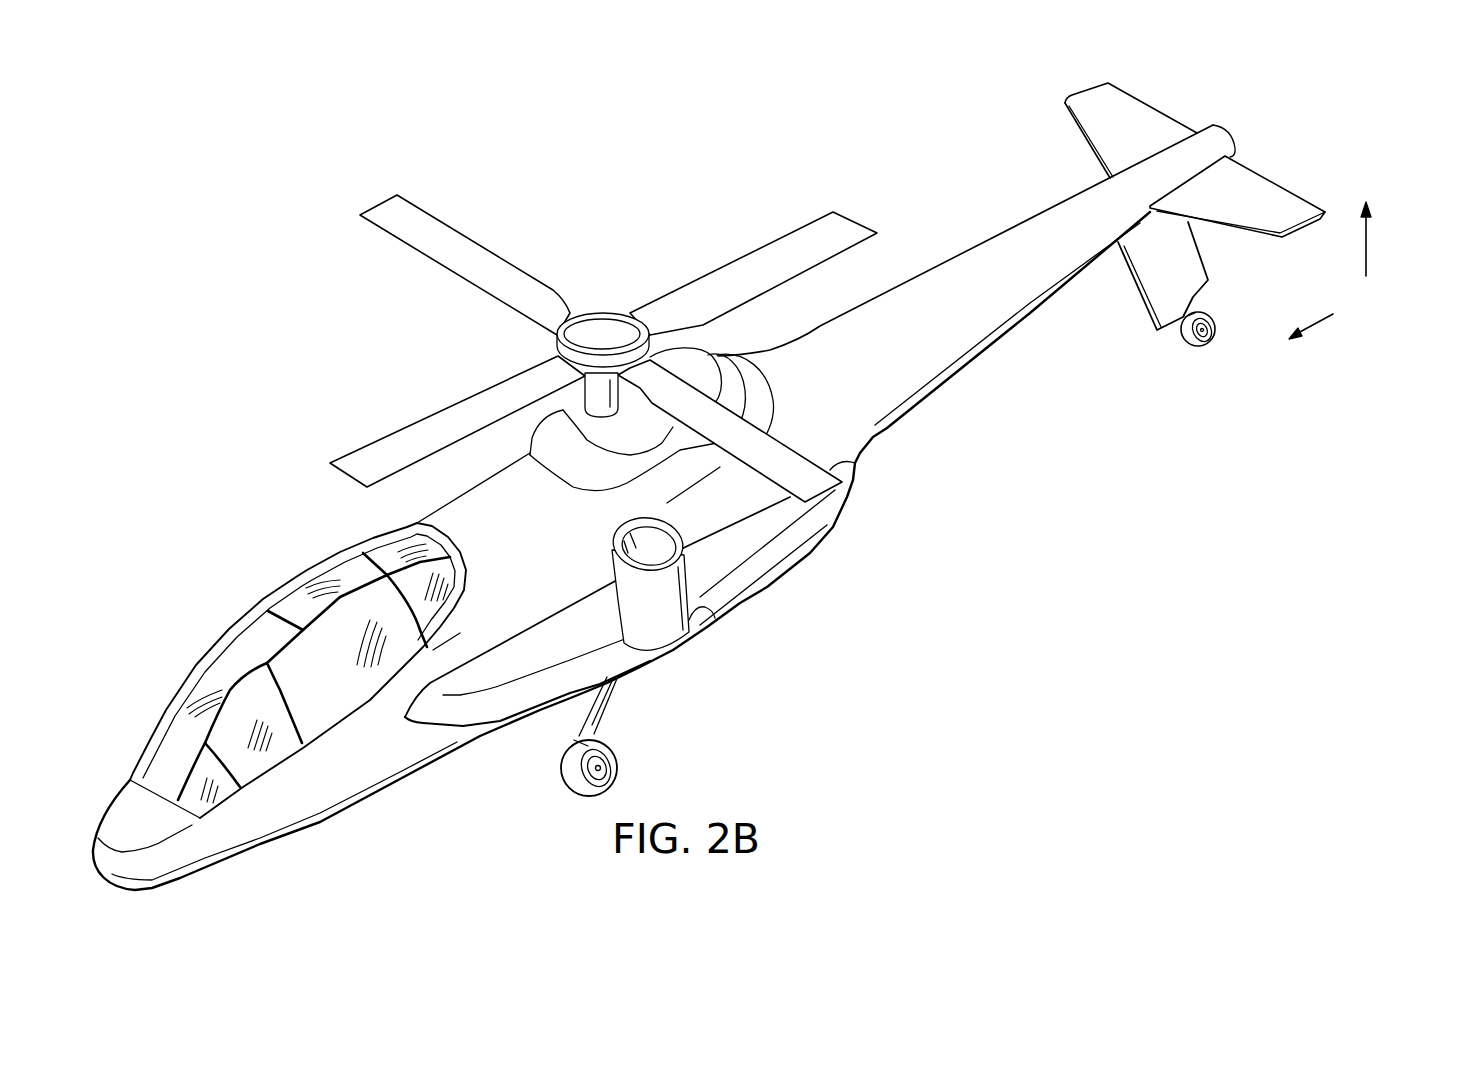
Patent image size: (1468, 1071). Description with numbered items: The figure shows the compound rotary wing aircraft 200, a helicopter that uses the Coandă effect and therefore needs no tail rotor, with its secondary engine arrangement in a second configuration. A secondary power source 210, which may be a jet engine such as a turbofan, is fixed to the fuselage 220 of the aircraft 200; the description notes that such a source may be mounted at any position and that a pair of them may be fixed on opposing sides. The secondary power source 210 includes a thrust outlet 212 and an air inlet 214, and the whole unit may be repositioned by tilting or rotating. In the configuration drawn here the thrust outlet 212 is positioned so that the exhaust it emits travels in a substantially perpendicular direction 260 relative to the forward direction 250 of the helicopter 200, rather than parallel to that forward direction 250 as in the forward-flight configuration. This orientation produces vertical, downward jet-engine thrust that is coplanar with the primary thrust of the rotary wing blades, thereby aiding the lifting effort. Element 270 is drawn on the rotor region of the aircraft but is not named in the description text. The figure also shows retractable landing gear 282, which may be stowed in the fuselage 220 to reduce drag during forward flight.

The aircraft 200 is at (709, 472).
The secondary power source 210 is at (635, 664).
The thrust outlet 212 is at (681, 655).
The air inlet 214 is at (633, 542).
The fuselage 220 is at (543, 510).
The forward direction 250 is at (1322, 322).
The perpendicular direction 260 is at (1368, 250).
The rotor gearbox fairing 270 is at (693, 367).
The retractable landing gear 282 is at (563, 777).